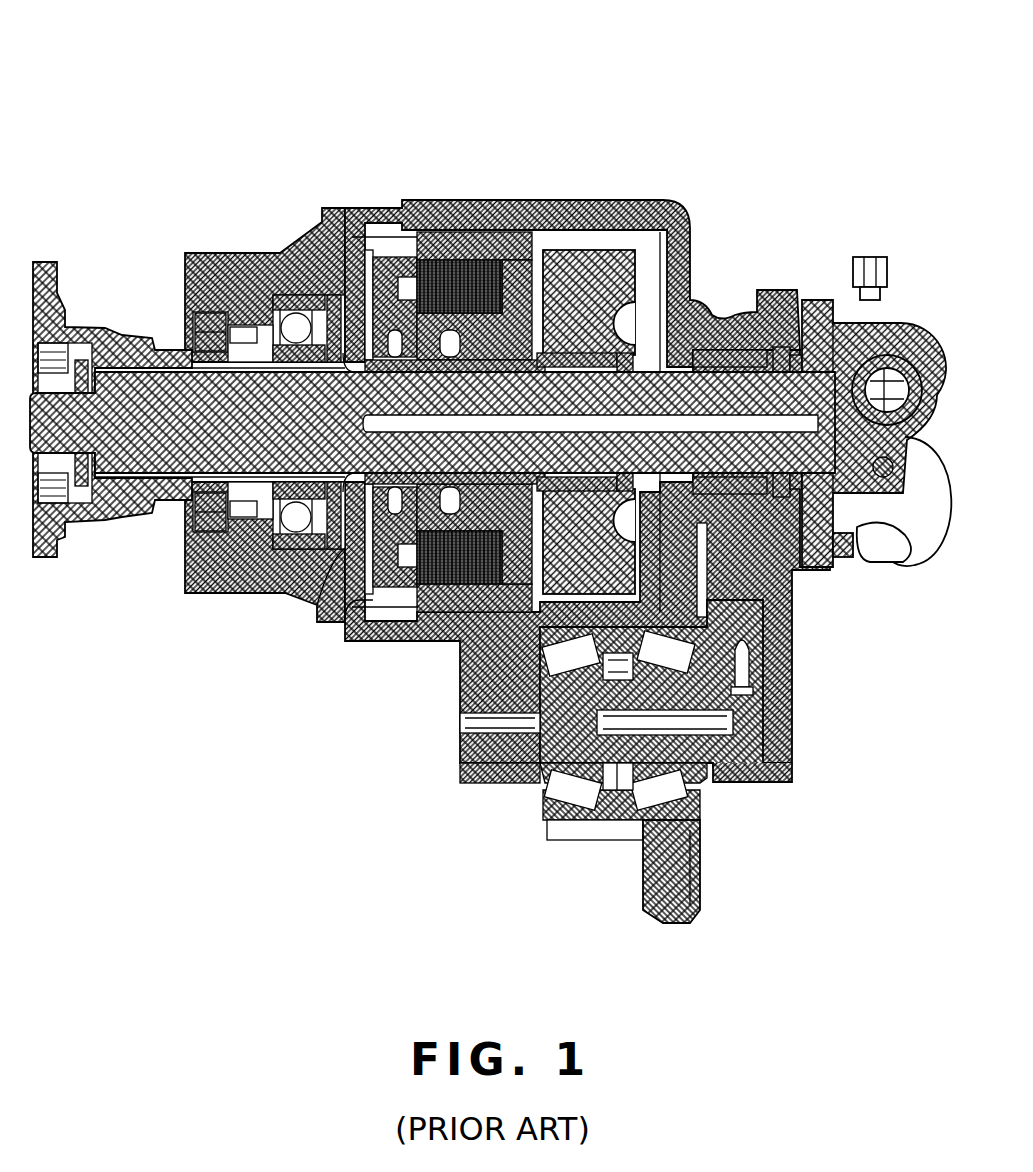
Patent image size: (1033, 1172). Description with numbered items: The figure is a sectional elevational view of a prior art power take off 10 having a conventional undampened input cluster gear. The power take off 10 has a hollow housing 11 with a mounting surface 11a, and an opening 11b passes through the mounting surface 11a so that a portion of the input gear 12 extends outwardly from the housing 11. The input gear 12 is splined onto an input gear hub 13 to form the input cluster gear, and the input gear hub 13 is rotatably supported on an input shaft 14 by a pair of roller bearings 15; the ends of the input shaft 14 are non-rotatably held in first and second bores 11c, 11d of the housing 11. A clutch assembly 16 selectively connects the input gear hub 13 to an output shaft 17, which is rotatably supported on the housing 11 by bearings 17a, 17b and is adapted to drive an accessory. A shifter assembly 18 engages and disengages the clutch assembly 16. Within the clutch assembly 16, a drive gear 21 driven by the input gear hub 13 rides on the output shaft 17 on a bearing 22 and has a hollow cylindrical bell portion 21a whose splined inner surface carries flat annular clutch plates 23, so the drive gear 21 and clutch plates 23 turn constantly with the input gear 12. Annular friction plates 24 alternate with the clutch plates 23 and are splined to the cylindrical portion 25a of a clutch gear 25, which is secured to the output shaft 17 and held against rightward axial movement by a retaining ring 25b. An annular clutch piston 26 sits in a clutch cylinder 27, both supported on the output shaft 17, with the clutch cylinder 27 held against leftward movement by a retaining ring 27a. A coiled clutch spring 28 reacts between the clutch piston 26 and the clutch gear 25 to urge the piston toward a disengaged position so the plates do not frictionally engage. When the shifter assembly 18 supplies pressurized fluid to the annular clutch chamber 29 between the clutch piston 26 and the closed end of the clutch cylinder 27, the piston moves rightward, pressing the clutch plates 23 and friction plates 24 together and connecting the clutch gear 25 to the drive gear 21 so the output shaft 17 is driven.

The power take off 10 is at (738, 90).
The housing 11 is at (690, 210).
The mounting surface 11a is at (762, 785).
The opening 11b is at (537, 790).
The first bore 11c is at (485, 683).
The second bore 11d is at (735, 710).
The input gear 12 is at (688, 888).
The input gear hub 13 is at (600, 810).
The input shaft 14 is at (748, 750).
The roller bearings 15 is at (703, 797).
The clutch assembly 16 is at (527, 228).
The output shaft 17 is at (130, 385).
The bearing 17a is at (288, 322).
The bearing 17b is at (727, 352).
The shifter assembly 18 is at (885, 245).
The drive gear 21 is at (608, 258).
The hollow cylindrical bell portion 21a is at (498, 242).
The bearing 22 is at (585, 363).
The clutch plates 23 is at (494, 254).
The friction plates 24 is at (450, 260).
The clutch gear 25 is at (498, 517).
The cylindrical portion 25a is at (410, 527).
The retaining ring 25b is at (512, 362).
The clutch piston 26 is at (350, 560).
The clutch cylinder 27 is at (333, 250).
The retaining ring 27a is at (340, 365).
The clutch spring 28 is at (358, 282).
The clutch chamber 29 is at (343, 548).